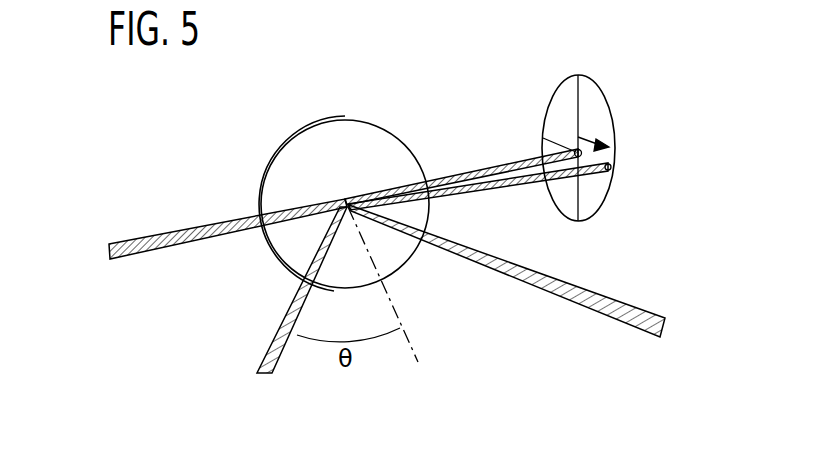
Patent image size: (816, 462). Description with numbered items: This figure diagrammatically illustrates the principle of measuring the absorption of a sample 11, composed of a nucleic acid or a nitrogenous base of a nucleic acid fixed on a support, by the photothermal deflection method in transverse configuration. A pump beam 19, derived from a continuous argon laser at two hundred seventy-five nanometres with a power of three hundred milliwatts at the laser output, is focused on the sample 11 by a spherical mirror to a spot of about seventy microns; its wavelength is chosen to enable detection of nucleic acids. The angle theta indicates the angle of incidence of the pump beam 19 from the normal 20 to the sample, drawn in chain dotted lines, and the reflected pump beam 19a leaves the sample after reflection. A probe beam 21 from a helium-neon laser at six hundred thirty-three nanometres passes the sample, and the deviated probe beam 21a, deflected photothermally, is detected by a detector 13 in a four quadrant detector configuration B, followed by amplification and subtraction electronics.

The sample 11 is at (300, 133).
The detector 13 is at (576, 151).
The four quadrant detector B is at (597, 88).
The probe beam 21 is at (150, 237).
The deviated probe beam 21a is at (516, 181).
The pump beam 19 is at (270, 348).
The reflected pump beam 19a is at (542, 284).
The normal 20 is at (393, 293).